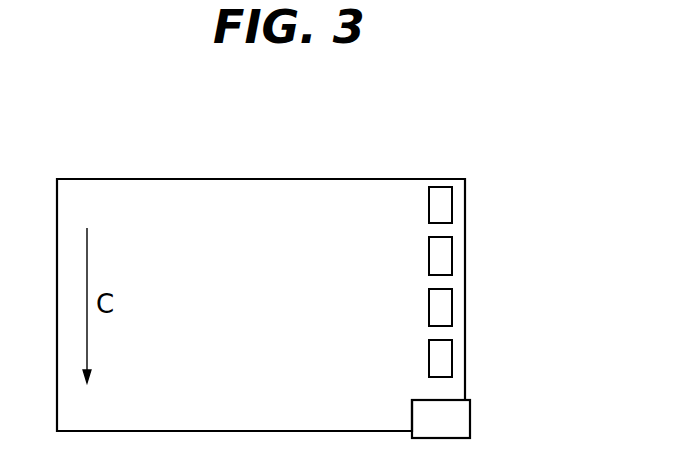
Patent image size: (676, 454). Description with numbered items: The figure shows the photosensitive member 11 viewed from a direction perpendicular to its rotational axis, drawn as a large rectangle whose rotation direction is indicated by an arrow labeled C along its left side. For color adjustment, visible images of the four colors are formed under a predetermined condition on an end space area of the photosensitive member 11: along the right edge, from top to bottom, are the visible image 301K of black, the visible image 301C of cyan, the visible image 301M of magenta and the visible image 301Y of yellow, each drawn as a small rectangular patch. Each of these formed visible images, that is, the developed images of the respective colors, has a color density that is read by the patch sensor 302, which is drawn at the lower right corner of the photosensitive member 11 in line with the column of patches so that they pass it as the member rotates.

The photosensitive member 11 is at (253, 179).
The visible image of K 301K is at (452, 203).
The visible image of C 301C is at (452, 255).
The visible image of M 301M is at (452, 304).
The visible image of Y 301Y is at (452, 355).
The patch sensor 302 is at (470, 420).